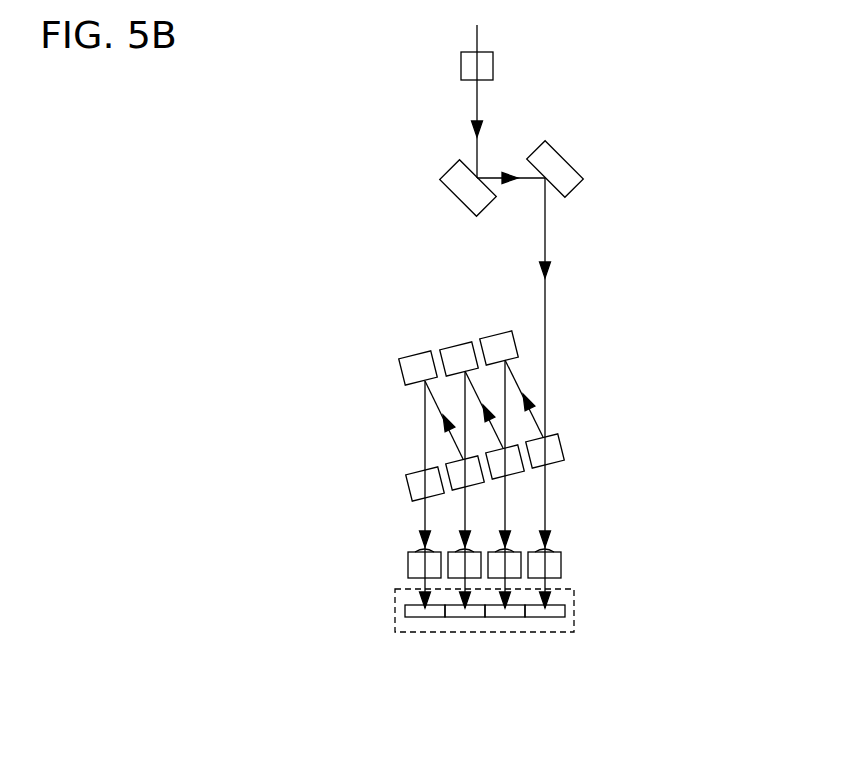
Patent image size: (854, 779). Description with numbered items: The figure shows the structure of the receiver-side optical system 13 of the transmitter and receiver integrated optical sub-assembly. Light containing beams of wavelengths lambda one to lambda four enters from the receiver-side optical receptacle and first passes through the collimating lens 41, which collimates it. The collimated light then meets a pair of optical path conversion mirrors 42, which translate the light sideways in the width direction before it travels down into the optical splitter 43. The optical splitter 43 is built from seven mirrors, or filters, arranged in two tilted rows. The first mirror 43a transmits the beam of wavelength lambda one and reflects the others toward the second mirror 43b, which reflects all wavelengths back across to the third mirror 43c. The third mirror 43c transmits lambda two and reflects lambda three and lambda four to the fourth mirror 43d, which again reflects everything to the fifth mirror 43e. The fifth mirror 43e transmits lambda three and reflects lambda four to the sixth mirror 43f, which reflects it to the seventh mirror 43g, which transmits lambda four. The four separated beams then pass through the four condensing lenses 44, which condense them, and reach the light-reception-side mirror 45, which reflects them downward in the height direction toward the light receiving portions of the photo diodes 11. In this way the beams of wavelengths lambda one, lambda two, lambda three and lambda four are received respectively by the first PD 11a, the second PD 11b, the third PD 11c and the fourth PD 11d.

The receiver-side optical system 13 is at (376, 88).
The collimating lens 41 is at (494, 64).
The optical path conversion mirrors 42 is at (458, 165).
The optical splitter 43 is at (582, 372).
The first mirror 43a is at (563, 447).
The second mirror 43b is at (497, 337).
The third mirror 43c is at (507, 445).
The fourth mirror 43d is at (449, 347).
The fifth mirror 43e is at (462, 458).
The sixth mirror 43f is at (415, 352).
The seventh mirror 43g is at (407, 487).
The condensing lenses 44 is at (408, 562).
The light-reception-side mirror 45 is at (574, 602).
The photo diodes 11 is at (364, 609).
The first PD 11a is at (550, 617).
The second PD 11b is at (503, 617).
The third PD 11c is at (460, 617).
The fourth PD 11d is at (415, 617).